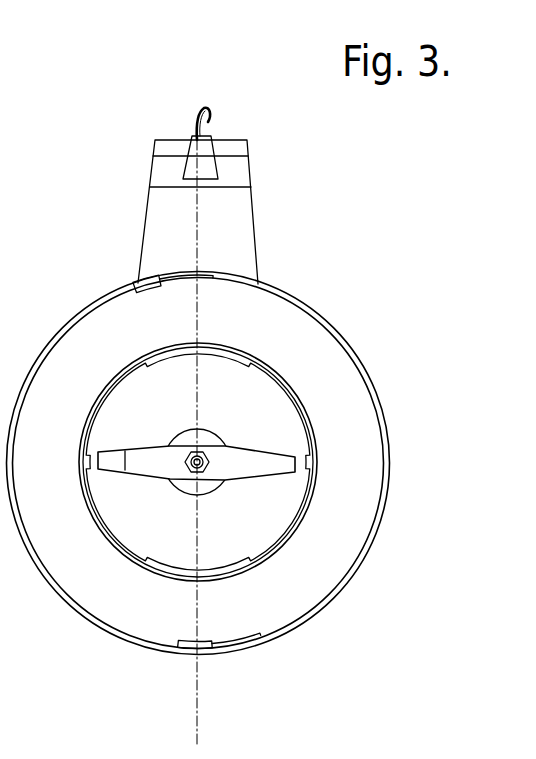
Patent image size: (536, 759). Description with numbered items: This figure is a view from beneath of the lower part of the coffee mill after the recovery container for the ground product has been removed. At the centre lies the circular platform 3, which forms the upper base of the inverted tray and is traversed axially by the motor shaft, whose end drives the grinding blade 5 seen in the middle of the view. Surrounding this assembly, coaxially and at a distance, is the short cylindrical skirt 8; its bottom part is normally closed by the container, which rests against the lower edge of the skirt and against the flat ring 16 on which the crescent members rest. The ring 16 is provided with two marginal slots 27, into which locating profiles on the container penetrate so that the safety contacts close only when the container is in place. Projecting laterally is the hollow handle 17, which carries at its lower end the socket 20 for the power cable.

The circular platform 3 is at (283, 432).
The grinding blade 5 is at (108, 447).
The cylindrical skirt 8 is at (338, 587).
The flat ring 16 is at (95, 600).
The hollow handle 17 is at (247, 232).
The socket 20 is at (208, 124).
The marginal slots 27 is at (158, 278).